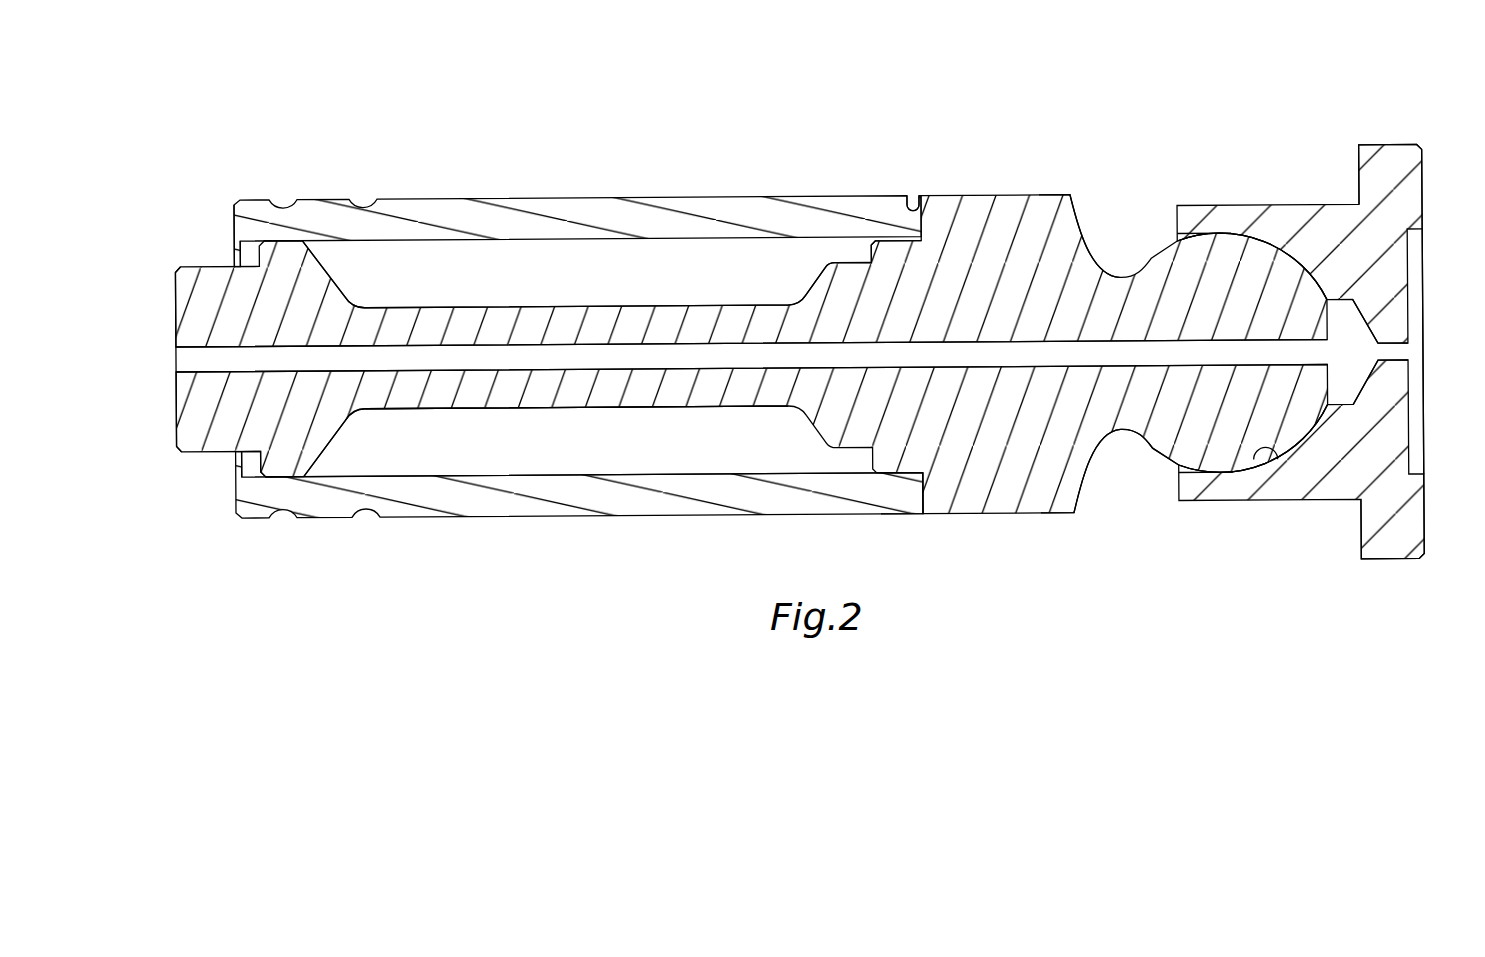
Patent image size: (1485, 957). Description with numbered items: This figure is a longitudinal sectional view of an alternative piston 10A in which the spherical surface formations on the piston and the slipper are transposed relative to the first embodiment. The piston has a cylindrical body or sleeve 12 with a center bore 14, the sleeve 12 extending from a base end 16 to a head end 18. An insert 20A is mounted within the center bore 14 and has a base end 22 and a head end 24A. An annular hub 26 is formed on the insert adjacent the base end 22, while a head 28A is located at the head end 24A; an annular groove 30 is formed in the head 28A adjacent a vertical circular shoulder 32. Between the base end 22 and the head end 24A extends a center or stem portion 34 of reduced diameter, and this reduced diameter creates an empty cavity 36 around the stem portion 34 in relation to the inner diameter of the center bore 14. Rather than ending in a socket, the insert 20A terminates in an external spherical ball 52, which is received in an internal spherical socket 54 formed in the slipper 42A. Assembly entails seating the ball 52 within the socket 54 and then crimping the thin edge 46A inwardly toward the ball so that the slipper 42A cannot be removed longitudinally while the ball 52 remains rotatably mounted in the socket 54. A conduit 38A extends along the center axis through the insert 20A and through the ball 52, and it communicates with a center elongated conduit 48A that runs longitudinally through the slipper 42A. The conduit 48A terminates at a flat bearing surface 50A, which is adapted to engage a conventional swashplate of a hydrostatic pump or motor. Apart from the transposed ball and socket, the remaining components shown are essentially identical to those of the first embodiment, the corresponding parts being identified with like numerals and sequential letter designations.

The alternative piston 10A is at (257, 80).
The cylindrical body or sleeve 12 is at (459, 196).
The center bore 14 is at (533, 245).
The base end 16 is at (240, 240).
The head end 18 is at (931, 515).
The insert 20A is at (1012, 196).
The base end 22 is at (184, 268).
The head end 24A is at (1074, 197).
The annular hub 26 is at (289, 479).
The head 28A is at (1074, 506).
The annular groove 30 is at (874, 246).
The vertical circular shoulder 32 is at (912, 198).
The center or stem portion 34 is at (450, 411).
The empty cavity 36 is at (508, 436).
The conduit 38A is at (706, 350).
The slipper 42A is at (1258, 207).
The thin edge 46A is at (1178, 241).
The center elongated conduit 48A is at (1390, 352).
The flat bearing surface 50A is at (1424, 148).
The ball 52 is at (1183, 447).
The socket 54 is at (1256, 455).